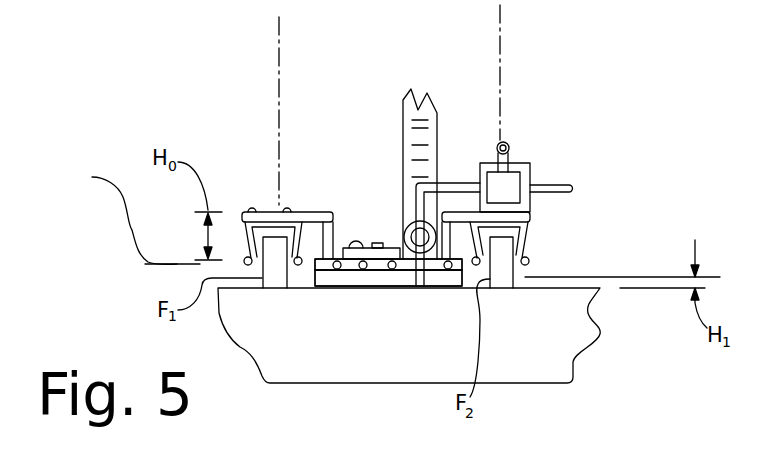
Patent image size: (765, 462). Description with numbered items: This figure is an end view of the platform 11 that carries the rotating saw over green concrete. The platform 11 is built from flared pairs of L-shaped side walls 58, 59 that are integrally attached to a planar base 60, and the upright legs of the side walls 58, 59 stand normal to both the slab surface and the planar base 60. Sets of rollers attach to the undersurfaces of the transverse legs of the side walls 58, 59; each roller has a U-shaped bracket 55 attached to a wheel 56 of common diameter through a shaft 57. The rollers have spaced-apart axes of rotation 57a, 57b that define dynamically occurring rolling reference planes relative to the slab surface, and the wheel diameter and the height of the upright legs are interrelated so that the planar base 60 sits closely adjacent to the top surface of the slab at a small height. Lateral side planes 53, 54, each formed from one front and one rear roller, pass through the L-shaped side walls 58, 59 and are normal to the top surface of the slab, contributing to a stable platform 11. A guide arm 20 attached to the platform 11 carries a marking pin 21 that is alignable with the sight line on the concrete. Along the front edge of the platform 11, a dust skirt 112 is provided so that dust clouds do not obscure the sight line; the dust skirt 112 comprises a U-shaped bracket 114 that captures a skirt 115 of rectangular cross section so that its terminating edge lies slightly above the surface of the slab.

The platform 11 is at (265, 145).
The guide arm 20 is at (543, 157).
The marking pin 21 is at (557, 185).
The lateral plane 53 is at (278, 65).
The lateral plane 54 is at (500, 68).
The U-shaped bracket 55 is at (527, 240).
The wheel 56 is at (498, 272).
The shaft 57 is at (528, 260).
The axis of rotation 57a is at (118, 153).
The axis of rotation 57b is at (92, 177).
The L-shaped side wall 58 is at (315, 202).
The L-shaped side wall 59 is at (453, 200).
The planar base 60 is at (345, 246).
The dust skirt 112 is at (384, 276).
The U-shaped bracket 114 is at (349, 265).
The skirt 115 is at (333, 280).